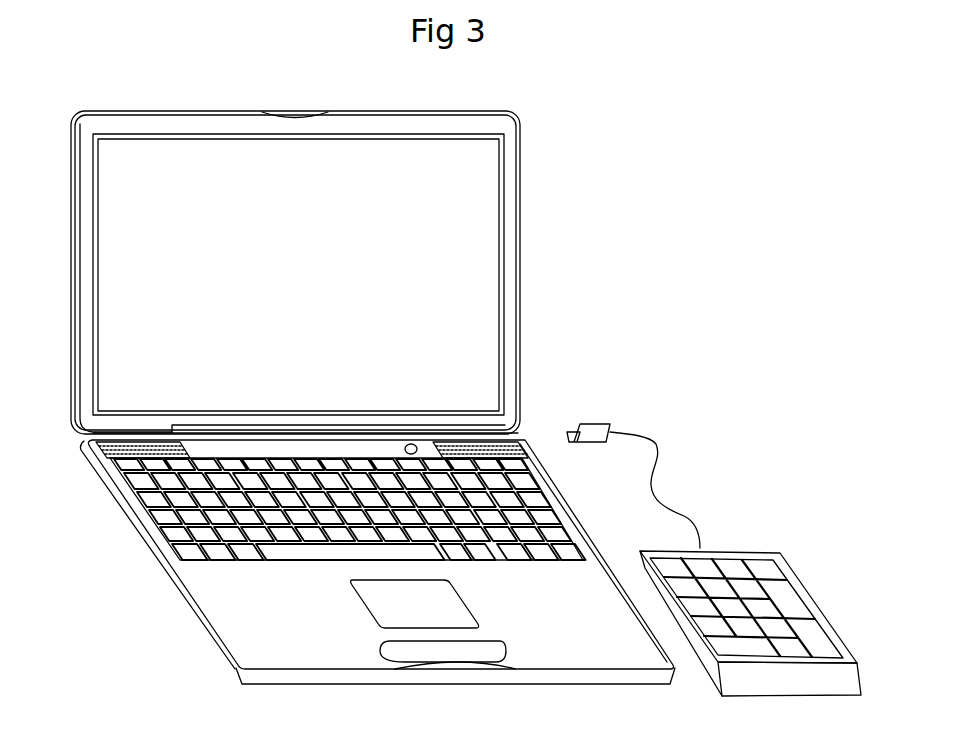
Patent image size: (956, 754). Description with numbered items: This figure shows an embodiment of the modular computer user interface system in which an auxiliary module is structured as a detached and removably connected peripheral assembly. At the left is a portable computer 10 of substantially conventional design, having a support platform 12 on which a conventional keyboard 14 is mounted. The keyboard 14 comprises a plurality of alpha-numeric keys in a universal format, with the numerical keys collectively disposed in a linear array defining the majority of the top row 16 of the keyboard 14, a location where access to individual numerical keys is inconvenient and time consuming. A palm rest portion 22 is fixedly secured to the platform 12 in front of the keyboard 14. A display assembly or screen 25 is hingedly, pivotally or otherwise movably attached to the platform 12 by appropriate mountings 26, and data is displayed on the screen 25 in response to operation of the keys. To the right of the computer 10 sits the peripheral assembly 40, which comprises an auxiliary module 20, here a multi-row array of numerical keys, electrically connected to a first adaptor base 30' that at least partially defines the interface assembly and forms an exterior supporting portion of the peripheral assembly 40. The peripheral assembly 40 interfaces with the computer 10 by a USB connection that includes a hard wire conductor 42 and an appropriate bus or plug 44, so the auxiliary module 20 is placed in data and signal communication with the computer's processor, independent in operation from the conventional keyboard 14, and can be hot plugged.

The portable computer 10 is at (577, 100).
The support platform 12 is at (184, 620).
The keyboard 14 is at (155, 538).
The top row of numerical keys 16 is at (118, 488).
The auxiliary module 20 is at (781, 582).
The palm rest portion 22 is at (286, 648).
The display assembly 25 is at (467, 280).
The mountings 26 is at (427, 440).
The first adaptor base 30' is at (766, 611).
The peripheral assembly 40 is at (752, 490).
The hard wire conductor 42 is at (655, 440).
The plug 44 is at (591, 426).